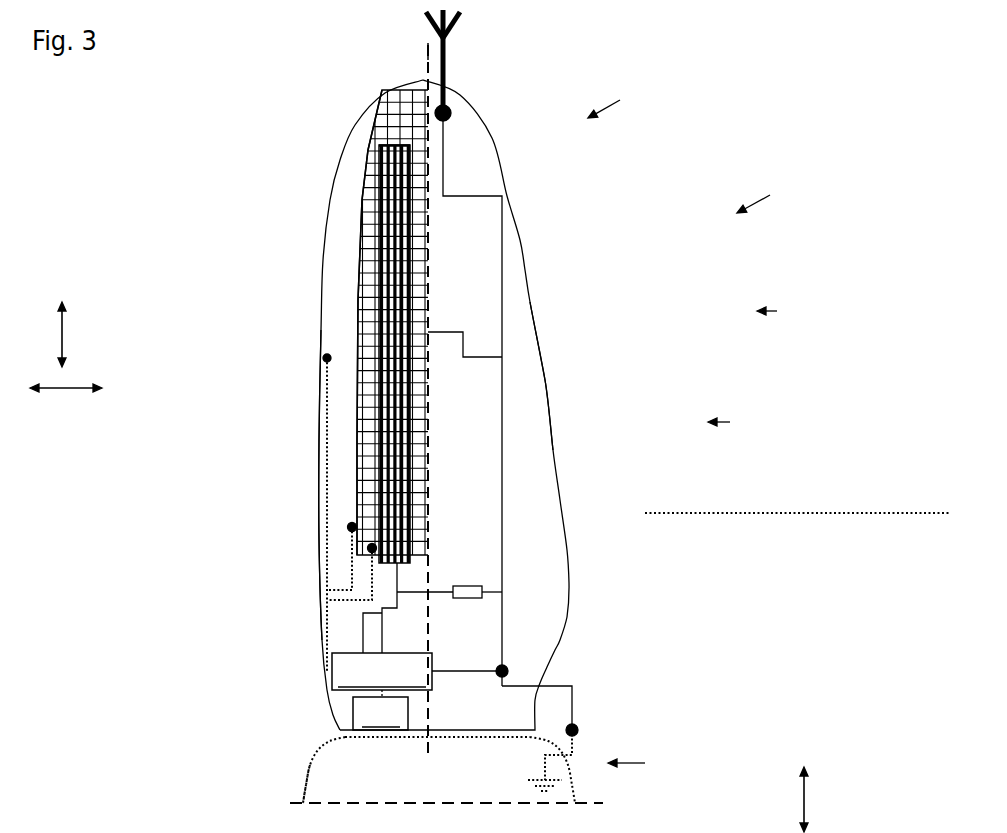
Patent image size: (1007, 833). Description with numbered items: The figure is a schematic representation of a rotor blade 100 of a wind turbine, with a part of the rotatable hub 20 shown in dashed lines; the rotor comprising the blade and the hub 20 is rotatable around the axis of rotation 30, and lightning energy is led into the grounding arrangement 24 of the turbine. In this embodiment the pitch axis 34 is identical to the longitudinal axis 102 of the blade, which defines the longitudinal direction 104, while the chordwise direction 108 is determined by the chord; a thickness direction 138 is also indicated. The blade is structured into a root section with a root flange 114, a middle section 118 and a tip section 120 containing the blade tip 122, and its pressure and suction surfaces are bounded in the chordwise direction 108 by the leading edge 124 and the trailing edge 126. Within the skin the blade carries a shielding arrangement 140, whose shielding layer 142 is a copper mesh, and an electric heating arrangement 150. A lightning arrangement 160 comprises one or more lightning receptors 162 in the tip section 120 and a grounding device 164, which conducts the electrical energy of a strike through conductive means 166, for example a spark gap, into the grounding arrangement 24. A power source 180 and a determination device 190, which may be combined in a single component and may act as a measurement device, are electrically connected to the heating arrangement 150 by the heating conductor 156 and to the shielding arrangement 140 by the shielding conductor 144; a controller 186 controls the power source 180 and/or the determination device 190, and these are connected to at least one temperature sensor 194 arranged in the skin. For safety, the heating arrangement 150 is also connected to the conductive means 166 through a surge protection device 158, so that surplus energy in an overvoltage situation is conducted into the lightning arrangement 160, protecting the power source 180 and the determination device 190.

The rotor blade 100 is at (774, 194).
The longitudinal axis 102 is at (428, 52).
The pitch axis 34 is at (378, 52).
The rotatable hub 20 is at (305, 787).
The grounding arrangement 24 is at (642, 763).
The axis of rotation 30 is at (290, 803).
The longitudinal direction 104 is at (62, 339).
The chordwise direction 108 is at (65, 390).
The root flange 114 is at (340, 733).
The middle section 118 is at (741, 421).
The tip section 120 is at (625, 99).
The blade tip 122 is at (499, 132).
The leading edge 124 is at (318, 415).
The trailing edge 126 is at (548, 398).
The thickness direction 138 is at (804, 802).
The shielding arrangement 140 is at (348, 266).
The shielding layer 142 is at (375, 213).
The shielding conductor 144 is at (458, 330).
The electric heating arrangement 150 is at (395, 328).
The heating conductor 156 is at (380, 638).
The surge protection device 158 is at (466, 585).
The lightning arrangement 160 is at (789, 311).
The lightning receptor 162 is at (462, 14).
The grounding device 164 is at (572, 700).
The conductive means 166 is at (502, 310).
The power source 180 is at (420, 671).
The determination device 190 is at (382, 692).
The controller 186 is at (380, 713).
The temperature sensor 194 is at (327, 358).